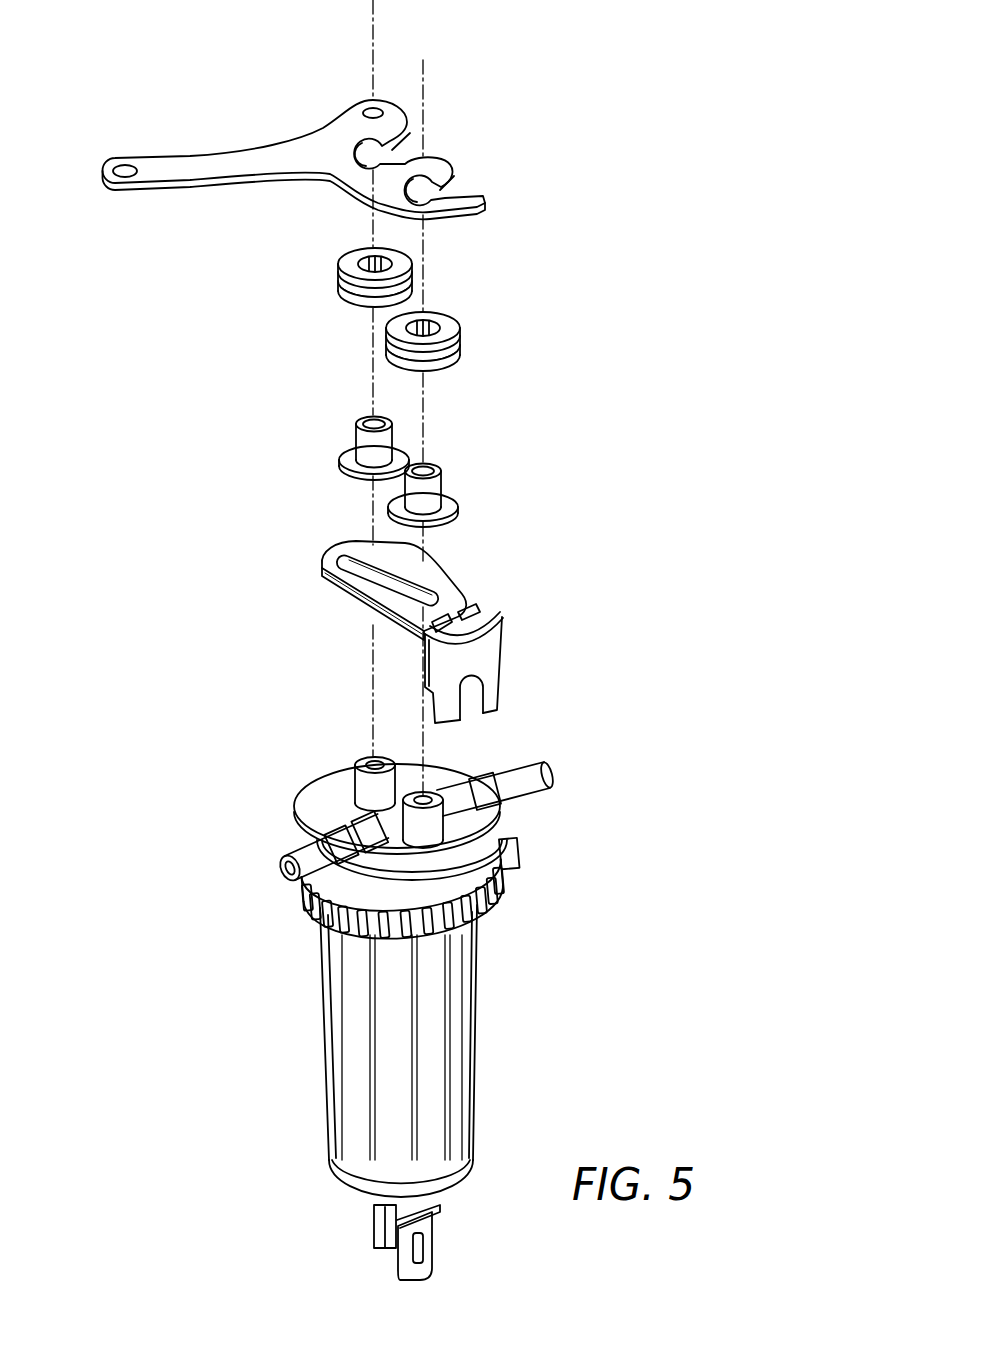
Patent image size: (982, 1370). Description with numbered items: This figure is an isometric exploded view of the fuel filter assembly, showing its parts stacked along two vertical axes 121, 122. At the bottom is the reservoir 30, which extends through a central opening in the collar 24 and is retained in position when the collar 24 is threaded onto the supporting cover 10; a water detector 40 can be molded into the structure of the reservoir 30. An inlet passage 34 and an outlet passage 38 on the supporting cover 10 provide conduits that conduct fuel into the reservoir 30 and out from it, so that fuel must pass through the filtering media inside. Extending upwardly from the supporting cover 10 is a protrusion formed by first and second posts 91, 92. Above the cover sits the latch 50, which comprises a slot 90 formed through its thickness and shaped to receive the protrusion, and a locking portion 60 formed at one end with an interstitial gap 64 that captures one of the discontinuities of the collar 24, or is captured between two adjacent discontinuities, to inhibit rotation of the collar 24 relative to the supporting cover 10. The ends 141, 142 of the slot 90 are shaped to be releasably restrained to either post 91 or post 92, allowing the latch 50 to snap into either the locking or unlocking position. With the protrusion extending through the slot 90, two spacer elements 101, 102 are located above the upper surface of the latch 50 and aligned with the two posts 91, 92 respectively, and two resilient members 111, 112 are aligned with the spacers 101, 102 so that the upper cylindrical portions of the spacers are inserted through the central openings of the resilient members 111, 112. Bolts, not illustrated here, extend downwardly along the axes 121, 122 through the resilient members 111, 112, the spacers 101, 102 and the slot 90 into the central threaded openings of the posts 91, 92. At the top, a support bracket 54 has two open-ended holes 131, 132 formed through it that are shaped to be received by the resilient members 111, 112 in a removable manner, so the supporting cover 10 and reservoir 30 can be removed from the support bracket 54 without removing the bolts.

The supporting cover 10 is at (418, 814).
The collar 24 is at (480, 870).
The reservoir 30 is at (465, 1053).
The inlet passage 34 is at (292, 824).
The outlet passage 38 is at (520, 785).
The water detector 40 is at (430, 1240).
The latch 50 is at (386, 573).
The support bracket 54 is at (313, 176).
The locking portion 60 is at (497, 676).
The interstitial gap 64 is at (463, 712).
The slot 90 is at (385, 598).
The first post 91 is at (500, 832).
The second post 92 is at (375, 790).
The first spacer element 101 is at (440, 483).
The second spacer element 102 is at (350, 441).
The first resilient member 111 is at (455, 346).
The second resilient member 112 is at (348, 284).
The first axis 121 is at (424, 70).
The second axis 122 is at (373, 60).
The first open-ended hole 131 is at (432, 193).
The second open-ended hole 132 is at (382, 162).
The first end of slot 141 is at (440, 604).
The second end of slot 142 is at (357, 553).